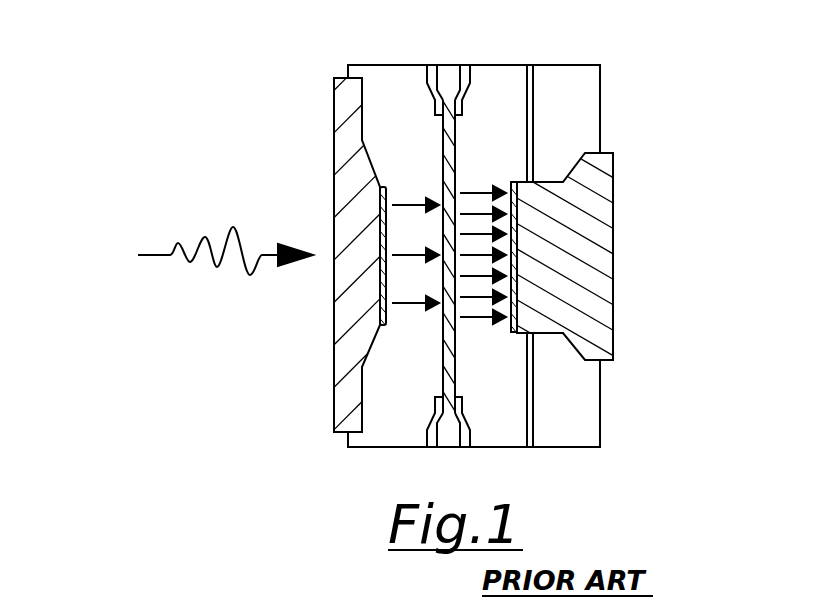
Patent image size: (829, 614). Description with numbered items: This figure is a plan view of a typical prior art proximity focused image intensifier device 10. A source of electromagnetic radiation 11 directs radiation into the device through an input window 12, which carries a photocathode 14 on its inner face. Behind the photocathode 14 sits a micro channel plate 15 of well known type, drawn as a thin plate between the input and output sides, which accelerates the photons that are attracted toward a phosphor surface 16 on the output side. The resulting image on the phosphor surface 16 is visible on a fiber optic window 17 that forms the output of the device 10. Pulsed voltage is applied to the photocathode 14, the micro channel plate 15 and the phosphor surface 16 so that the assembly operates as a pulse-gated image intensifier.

The proximity focused image intensifier device 10 is at (276, 33).
The source of electromagnetic radiation 11 is at (107, 264).
The input window 12 is at (334, 274).
The photocathode 14 is at (380, 292).
The micro channel plate 15 is at (442, 347).
The phosphor surface 16 is at (515, 217).
The fiber optic window 17 is at (603, 268).